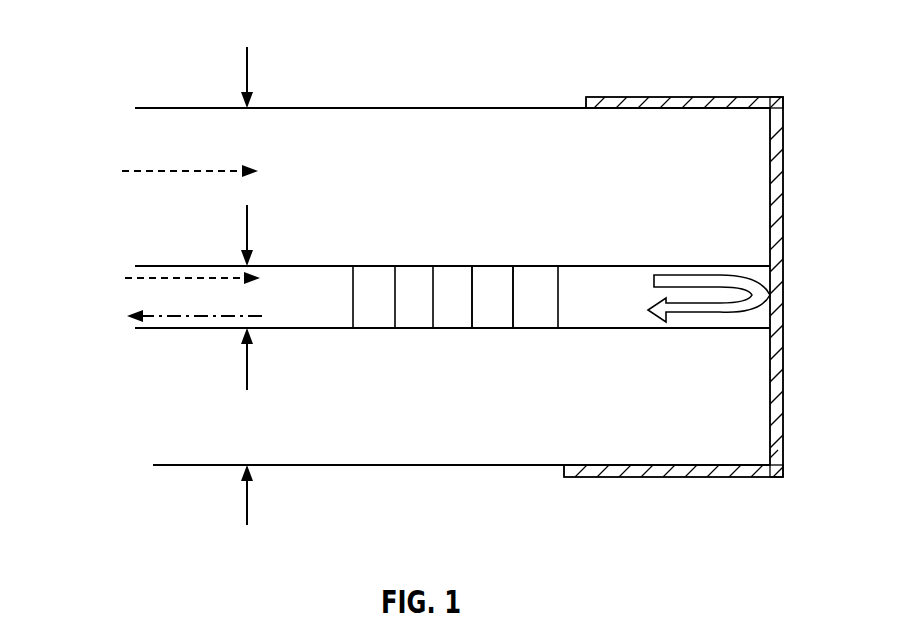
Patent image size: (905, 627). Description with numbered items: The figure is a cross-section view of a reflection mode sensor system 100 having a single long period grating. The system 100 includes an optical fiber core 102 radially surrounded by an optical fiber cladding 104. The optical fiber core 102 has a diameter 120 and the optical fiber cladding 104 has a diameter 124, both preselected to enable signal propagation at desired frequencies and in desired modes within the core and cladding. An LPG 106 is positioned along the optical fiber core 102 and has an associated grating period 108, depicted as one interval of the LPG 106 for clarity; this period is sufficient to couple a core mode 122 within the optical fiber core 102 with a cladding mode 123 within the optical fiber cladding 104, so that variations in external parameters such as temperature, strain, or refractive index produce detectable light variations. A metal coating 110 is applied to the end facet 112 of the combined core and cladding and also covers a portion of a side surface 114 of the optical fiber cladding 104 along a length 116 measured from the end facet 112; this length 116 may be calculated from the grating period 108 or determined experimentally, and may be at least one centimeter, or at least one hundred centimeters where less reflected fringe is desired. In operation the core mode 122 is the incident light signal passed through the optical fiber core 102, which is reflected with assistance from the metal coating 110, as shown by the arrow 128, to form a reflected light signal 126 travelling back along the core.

The reflection mode sensor system 100 is at (106, 44).
The optical fiber core 102 is at (196, 266).
The optical fiber cladding 104 is at (218, 108).
The LPG 106 is at (558, 243).
The grating period 108 is at (513, 336).
The metal coating 110 is at (783, 210).
The end facet 112 is at (784, 150).
The side surface 114 is at (668, 88).
The length 116 is at (783, 484).
The diameter 120 is at (245, 362).
The core mode 122 is at (155, 281).
The cladding mode 123 is at (152, 174).
The diameter 124 is at (250, 70).
The reflected light signal 126 is at (226, 313).
The arrow 128 is at (707, 275).